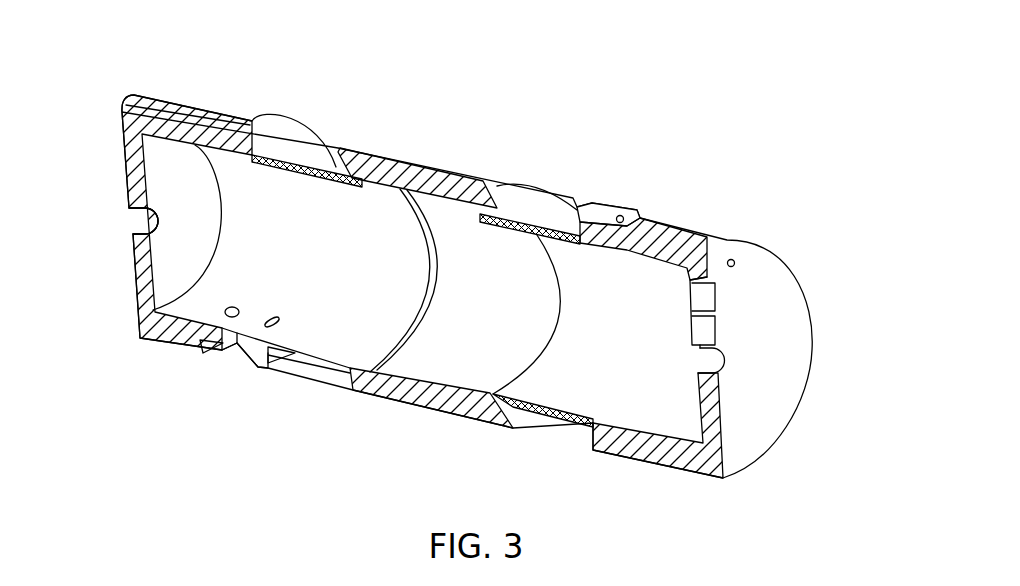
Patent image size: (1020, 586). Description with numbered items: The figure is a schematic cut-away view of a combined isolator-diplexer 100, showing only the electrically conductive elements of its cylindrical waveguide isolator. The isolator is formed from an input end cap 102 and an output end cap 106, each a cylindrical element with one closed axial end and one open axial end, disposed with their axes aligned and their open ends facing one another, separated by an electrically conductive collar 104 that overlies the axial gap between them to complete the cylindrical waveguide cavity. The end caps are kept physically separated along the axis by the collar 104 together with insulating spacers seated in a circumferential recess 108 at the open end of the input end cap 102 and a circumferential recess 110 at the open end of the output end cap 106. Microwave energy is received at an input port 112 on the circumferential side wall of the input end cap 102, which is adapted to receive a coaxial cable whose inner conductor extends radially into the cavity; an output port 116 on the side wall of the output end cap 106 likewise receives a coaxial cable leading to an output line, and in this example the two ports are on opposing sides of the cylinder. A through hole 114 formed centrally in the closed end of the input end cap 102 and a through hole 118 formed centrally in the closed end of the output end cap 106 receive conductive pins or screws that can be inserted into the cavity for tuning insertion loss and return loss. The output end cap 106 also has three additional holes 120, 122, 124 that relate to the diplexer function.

The combined isolator-diplexer 100 is at (744, 79).
The input end cap 102 is at (178, 118).
The collar 104 is at (400, 165).
The output end cap 106 is at (662, 455).
The circumferential recess 108 is at (320, 366).
The circumferential recess 110 is at (558, 425).
The input port 112 is at (232, 348).
The through hole 114 is at (136, 222).
The output port 116 is at (637, 206).
The through hole 118 is at (724, 358).
The additional hole 120 is at (713, 278).
The additional hole 122 is at (717, 320).
The additional hole 124 is at (733, 261).